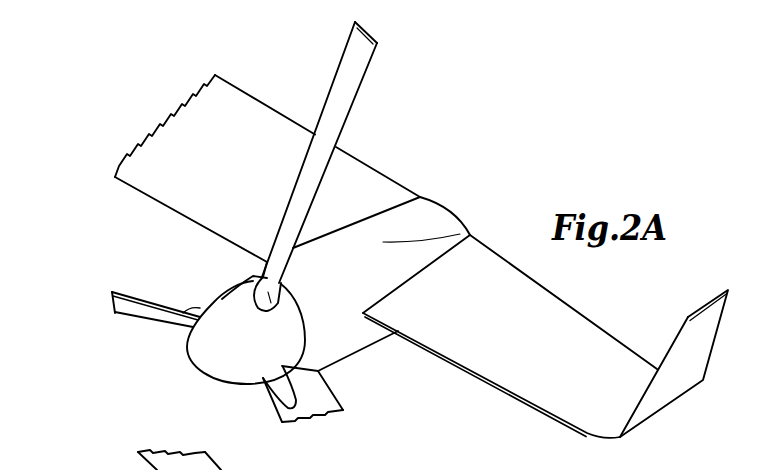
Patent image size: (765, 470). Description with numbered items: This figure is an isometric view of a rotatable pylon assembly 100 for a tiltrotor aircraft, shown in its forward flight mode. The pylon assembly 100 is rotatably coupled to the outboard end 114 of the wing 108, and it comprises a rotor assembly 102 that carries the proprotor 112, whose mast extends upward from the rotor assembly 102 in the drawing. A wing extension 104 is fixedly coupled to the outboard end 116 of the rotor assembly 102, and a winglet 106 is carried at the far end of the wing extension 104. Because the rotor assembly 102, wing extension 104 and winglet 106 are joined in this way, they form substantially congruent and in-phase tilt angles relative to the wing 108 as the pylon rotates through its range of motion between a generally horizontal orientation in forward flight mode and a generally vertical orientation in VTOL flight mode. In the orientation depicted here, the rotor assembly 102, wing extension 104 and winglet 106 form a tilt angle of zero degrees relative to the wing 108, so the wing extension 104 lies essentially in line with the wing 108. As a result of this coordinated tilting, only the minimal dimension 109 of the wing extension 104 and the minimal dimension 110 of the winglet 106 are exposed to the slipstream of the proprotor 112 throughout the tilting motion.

The pylon assembly 100 is at (470, 139).
The rotor assembly 102 is at (392, 217).
The wing extension 104 is at (580, 340).
The winglet 106 is at (672, 385).
The wing 108 is at (178, 203).
The minimal dimension of wing extension 109 is at (525, 403).
The minimal dimension of winglet 110 is at (673, 338).
The proprotor 112 is at (202, 368).
The outboard end of wing 114 is at (361, 218).
The outboard end of rotor assembly 116 is at (440, 258).